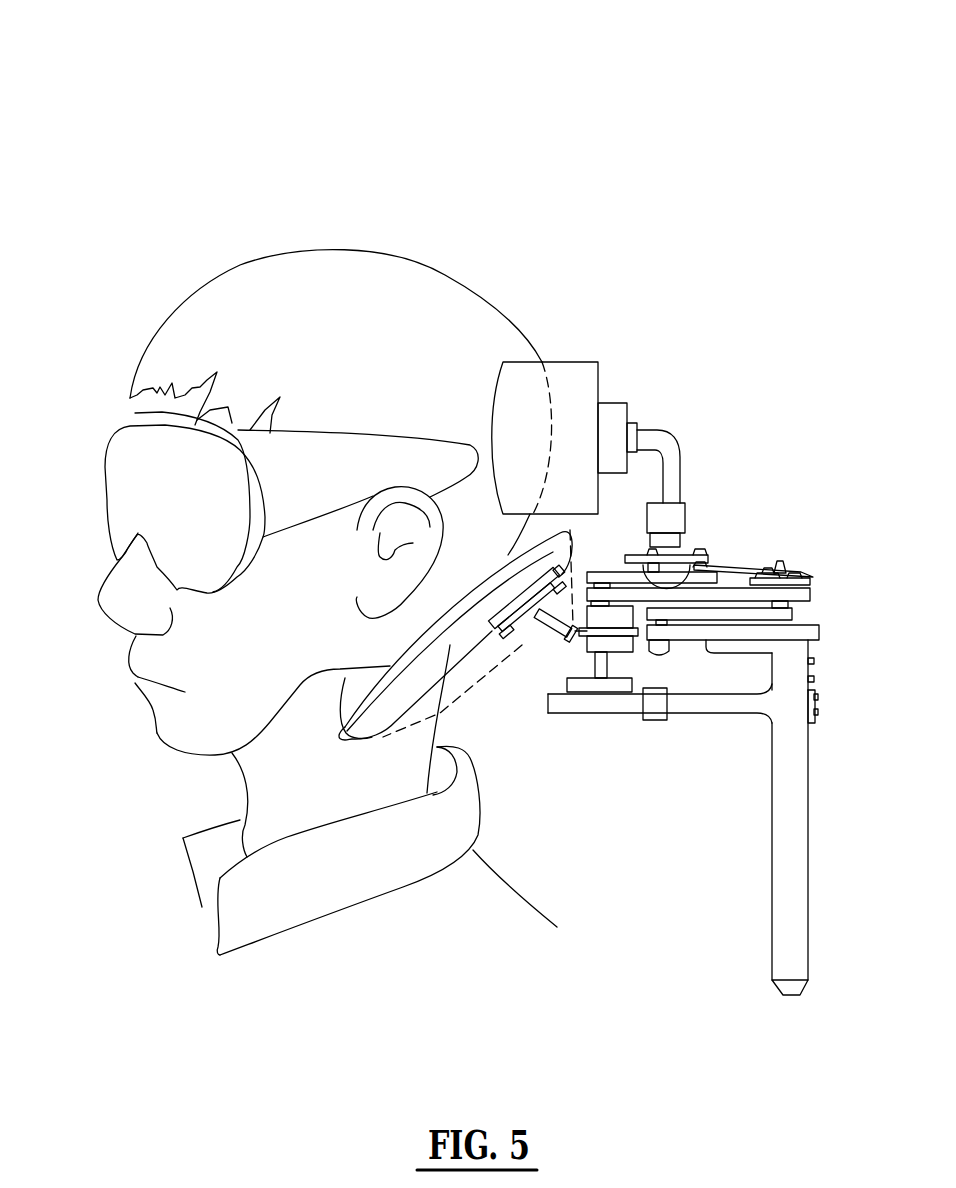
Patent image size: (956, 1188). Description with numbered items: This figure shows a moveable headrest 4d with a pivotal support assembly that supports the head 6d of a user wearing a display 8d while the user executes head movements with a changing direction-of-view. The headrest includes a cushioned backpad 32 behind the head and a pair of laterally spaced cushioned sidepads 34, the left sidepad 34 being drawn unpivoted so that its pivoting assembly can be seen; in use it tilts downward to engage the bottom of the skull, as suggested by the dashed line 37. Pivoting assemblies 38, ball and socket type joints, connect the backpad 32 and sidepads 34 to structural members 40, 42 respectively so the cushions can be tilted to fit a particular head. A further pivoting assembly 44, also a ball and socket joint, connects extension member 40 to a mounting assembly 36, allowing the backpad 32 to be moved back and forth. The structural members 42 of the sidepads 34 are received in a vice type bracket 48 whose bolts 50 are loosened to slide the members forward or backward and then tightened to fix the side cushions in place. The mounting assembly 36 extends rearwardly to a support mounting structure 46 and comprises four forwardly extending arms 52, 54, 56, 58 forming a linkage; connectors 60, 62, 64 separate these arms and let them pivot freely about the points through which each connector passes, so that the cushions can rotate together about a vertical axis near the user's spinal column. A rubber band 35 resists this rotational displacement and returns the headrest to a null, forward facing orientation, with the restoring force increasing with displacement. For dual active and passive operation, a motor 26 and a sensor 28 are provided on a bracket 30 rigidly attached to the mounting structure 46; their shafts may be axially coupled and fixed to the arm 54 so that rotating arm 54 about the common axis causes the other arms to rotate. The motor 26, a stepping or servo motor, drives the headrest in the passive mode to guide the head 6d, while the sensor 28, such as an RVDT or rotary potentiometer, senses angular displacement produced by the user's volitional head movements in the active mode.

The moveable headrest 4d is at (690, 217).
The head 6d is at (267, 260).
The display 8d is at (188, 402).
The backpad 32 is at (548, 362).
The connector 64 is at (593, 570).
The pivoting assembly 38 is at (613, 573).
The structural member 40 is at (663, 432).
The forwardly extending arm 52 is at (640, 552).
The pivoting assembly 44 is at (685, 560).
The connector 62 is at (780, 560).
The rubber band 35 is at (752, 573).
The forwardly extending arm 54 is at (812, 597).
The forwardly extending arm 56 is at (794, 613).
The forwardly extending arm 58 is at (818, 633).
The sidepad 34 is at (345, 678).
The sensor 28 is at (577, 688).
The bolt 50 is at (622, 655).
The vice type bracket 48 is at (582, 636).
The structural member 42 is at (538, 628).
The dashed line 37 is at (467, 690).
The motor 26 is at (662, 660).
The connector 60 is at (690, 660).
The bracket 30 is at (728, 712).
The mounting assembly 36 is at (688, 712).
The support mounting structure 46 is at (810, 940).